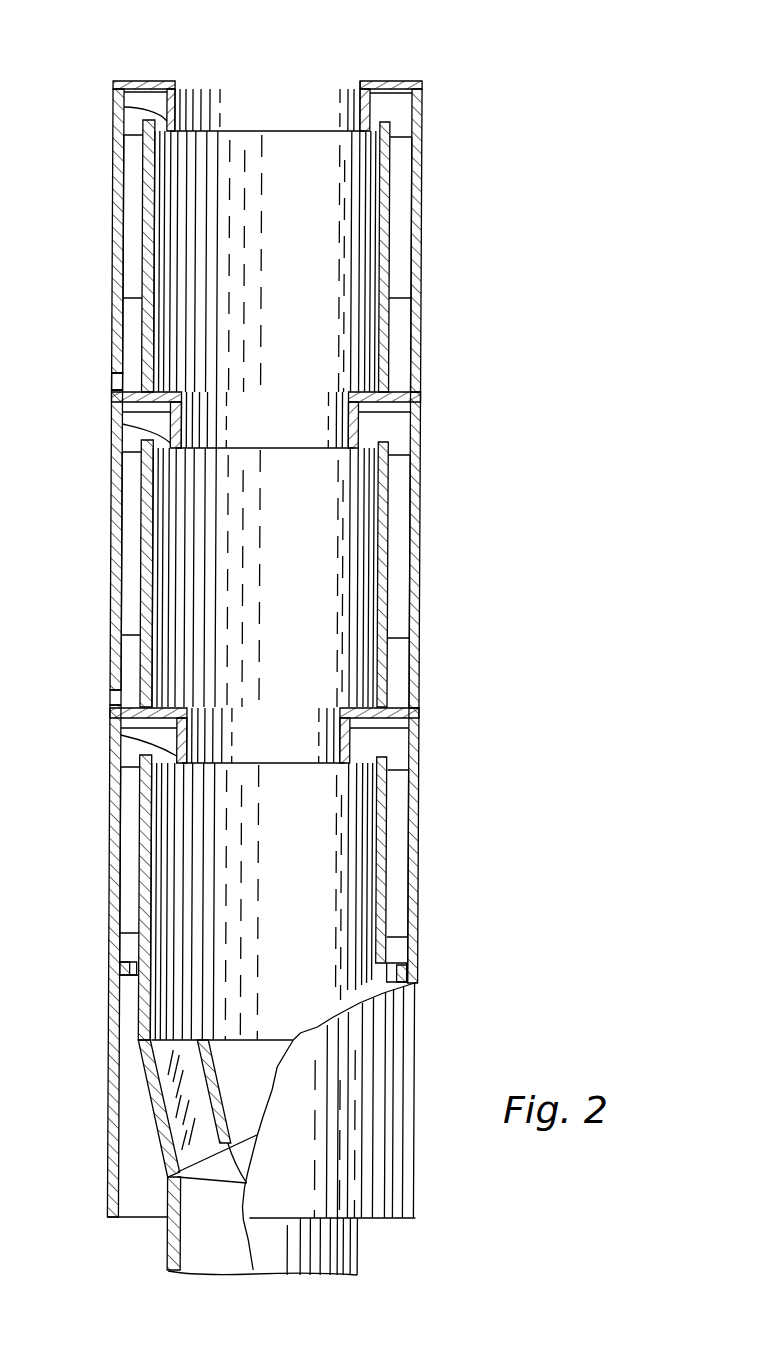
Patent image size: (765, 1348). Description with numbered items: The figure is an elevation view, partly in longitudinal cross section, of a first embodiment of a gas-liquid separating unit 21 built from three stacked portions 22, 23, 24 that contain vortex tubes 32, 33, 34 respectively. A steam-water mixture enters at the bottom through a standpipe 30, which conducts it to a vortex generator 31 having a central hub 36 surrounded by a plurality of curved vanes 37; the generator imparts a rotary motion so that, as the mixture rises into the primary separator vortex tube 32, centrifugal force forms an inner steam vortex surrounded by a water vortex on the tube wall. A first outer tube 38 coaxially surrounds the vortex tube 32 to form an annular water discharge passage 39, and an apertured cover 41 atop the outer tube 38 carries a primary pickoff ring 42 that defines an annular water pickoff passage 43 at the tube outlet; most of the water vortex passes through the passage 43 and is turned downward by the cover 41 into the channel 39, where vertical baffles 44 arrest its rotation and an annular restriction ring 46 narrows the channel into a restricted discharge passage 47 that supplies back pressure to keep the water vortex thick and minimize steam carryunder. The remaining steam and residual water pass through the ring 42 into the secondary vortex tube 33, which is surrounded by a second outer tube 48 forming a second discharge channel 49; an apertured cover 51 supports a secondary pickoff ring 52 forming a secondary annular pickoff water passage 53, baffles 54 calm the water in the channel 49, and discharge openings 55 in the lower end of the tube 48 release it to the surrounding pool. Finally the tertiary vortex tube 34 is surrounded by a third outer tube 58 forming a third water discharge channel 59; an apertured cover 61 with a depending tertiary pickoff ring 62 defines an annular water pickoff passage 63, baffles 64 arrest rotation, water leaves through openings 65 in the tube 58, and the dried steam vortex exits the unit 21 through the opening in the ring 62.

The gas-liquid separating unit 21 is at (480, 55).
The primary portion 22 is at (452, 825).
The secondary portion 23 is at (448, 498).
The tertiary portion 24 is at (467, 233).
The standpipe 30 is at (363, 1247).
The vortex generator 31 is at (205, 1092).
The primary separator vortex tube 32 is at (390, 857).
The secondary vortex tube 33 is at (390, 537).
The tertiary vortex tube 34 is at (390, 280).
The central hub 36 is at (236, 1177).
The curved vanes 37 is at (184, 1177).
The first outer tube 38 is at (420, 898).
The annular water discharge passage 39 is at (400, 954).
The apertured cover 41 is at (396, 720).
The primary pickoff ring 42 is at (121, 720).
The annular water pickoff passage 43 is at (153, 742).
The vertical baffles 44 is at (129, 831).
The annular restriction ring 46 is at (129, 967).
The restricted discharge passage 47 is at (141, 975).
The second outer tube 48 is at (420, 580).
The second discharge channel 49 is at (400, 672).
The apertured cover 51 is at (400, 408).
The secondary pickoff ring 52 is at (118, 407).
The secondary annular pickoff water passage 53 is at (140, 428).
The baffles 54 is at (133, 523).
The discharge openings 55 is at (113, 698).
The third outer tube 58 is at (422, 307).
The third water discharge channel 59 is at (400, 342).
The apertured cover 61 is at (392, 97).
The tertiary pickoff ring 62 is at (117, 95).
The annular water pickoff passage 63 is at (120, 107).
The baffles 64 is at (130, 228).
The openings 65 is at (113, 380).